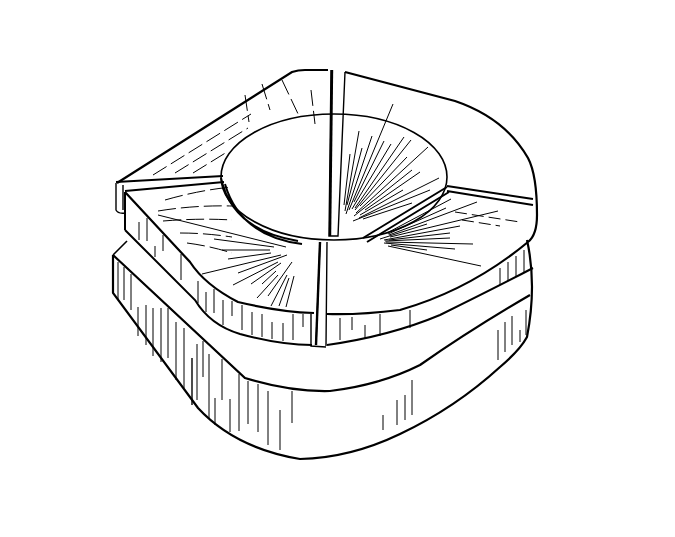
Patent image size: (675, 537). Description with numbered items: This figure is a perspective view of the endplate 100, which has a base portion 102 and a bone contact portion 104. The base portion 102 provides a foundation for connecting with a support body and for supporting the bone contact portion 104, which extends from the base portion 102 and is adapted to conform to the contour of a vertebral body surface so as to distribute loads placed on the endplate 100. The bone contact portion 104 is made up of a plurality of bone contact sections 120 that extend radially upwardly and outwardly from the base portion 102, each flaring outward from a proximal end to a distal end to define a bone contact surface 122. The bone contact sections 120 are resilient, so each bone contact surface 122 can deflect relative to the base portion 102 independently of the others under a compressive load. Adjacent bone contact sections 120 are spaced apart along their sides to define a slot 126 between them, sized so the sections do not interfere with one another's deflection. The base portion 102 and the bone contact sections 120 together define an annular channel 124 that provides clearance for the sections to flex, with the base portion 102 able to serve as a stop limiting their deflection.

The endplate 100 is at (137, 61).
The base portion 102 is at (295, 334).
The bone contact portion 104 is at (332, 198).
The bone contact sections 120 is at (178, 225).
The bone contact surface 122 is at (283, 103).
The annular channel 124 is at (146, 256).
The slot 126 is at (337, 72).